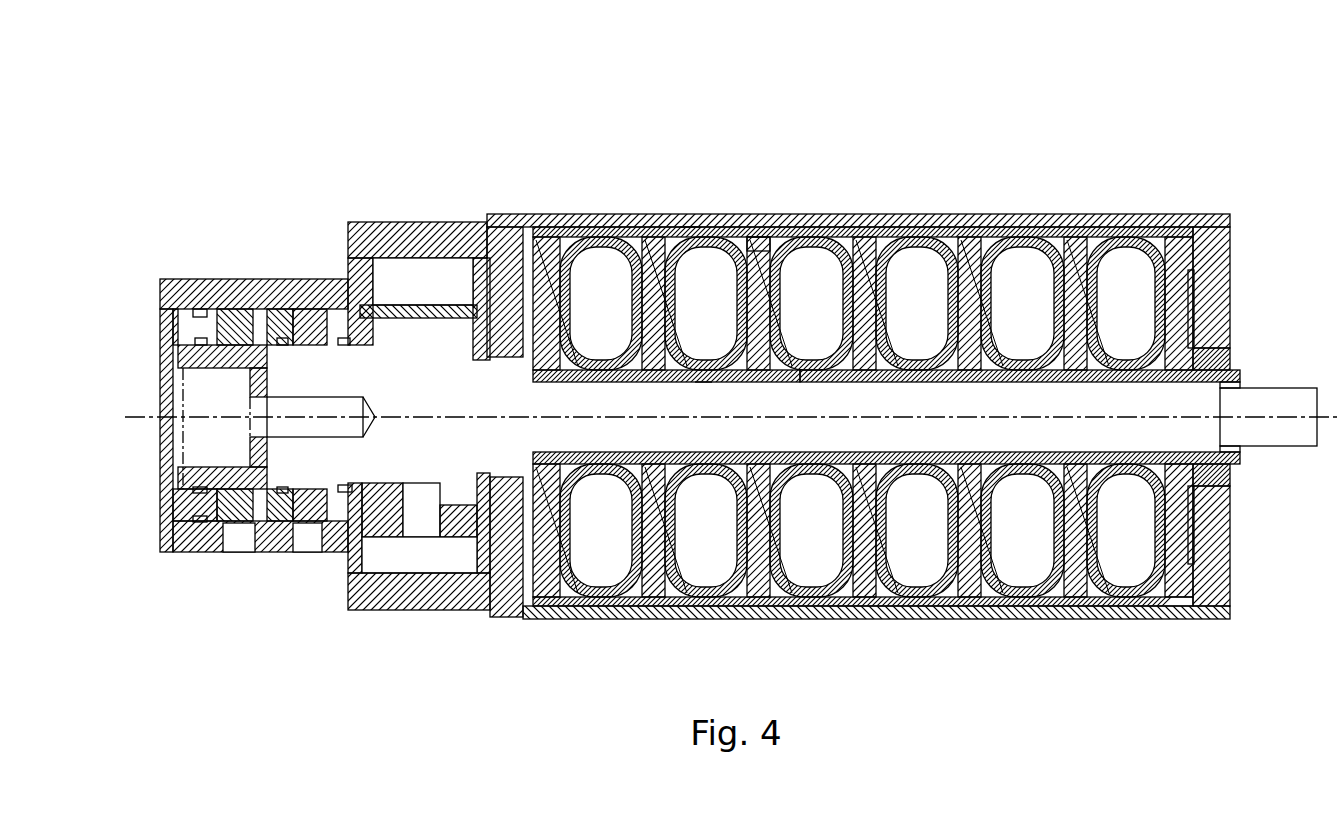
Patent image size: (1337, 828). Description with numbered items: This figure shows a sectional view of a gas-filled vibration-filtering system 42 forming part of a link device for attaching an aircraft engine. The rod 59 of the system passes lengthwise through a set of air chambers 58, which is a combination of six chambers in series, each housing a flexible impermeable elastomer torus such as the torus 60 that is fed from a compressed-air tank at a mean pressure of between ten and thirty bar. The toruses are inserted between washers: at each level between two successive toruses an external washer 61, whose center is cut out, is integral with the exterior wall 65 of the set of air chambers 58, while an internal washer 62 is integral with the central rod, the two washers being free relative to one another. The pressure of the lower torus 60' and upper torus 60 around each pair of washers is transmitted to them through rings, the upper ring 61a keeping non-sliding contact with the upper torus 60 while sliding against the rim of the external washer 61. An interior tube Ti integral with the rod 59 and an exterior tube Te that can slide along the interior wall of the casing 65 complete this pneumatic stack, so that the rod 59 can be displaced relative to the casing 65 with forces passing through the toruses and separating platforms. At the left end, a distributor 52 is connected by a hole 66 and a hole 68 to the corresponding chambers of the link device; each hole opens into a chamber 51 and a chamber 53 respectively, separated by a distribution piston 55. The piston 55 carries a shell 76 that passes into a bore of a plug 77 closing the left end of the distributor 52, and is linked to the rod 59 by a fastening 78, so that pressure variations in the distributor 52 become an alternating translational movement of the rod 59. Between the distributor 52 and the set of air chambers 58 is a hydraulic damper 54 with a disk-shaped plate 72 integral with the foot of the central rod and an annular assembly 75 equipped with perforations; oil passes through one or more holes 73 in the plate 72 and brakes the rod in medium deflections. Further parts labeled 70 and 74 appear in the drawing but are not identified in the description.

The gas-filled vibration-filtering system 42 is at (933, 88).
The chamber 51 is at (236, 318).
The distributor 52 is at (148, 268).
The chamber 53 is at (303, 318).
The hydraulic damper 54 is at (428, 158).
The distribution piston 55 is at (270, 507).
The set of air chambers 58 is at (1208, 158).
The rod 59 is at (1283, 390).
The torus 60 is at (811, 265).
The lower torus 60' is at (697, 271).
The external washer 61 is at (753, 238).
The upper ring 61a is at (752, 240).
The internal washer 62 is at (748, 382).
The exterior wall 65 is at (1018, 214).
The hole 66 is at (233, 545).
The hole 68 is at (300, 545).
The rotor 70 is at (822, 382).
The disk-shaped plate 72 is at (428, 260).
The hole 73 is at (425, 535).
The spacer 74 is at (466, 535).
The annular assembly 75 is at (380, 537).
The shell 76 is at (192, 362).
The plug 77 is at (170, 316).
The fastening 78 is at (268, 400).
The exterior tube Te is at (688, 222).
The interior tube Ti is at (703, 383).